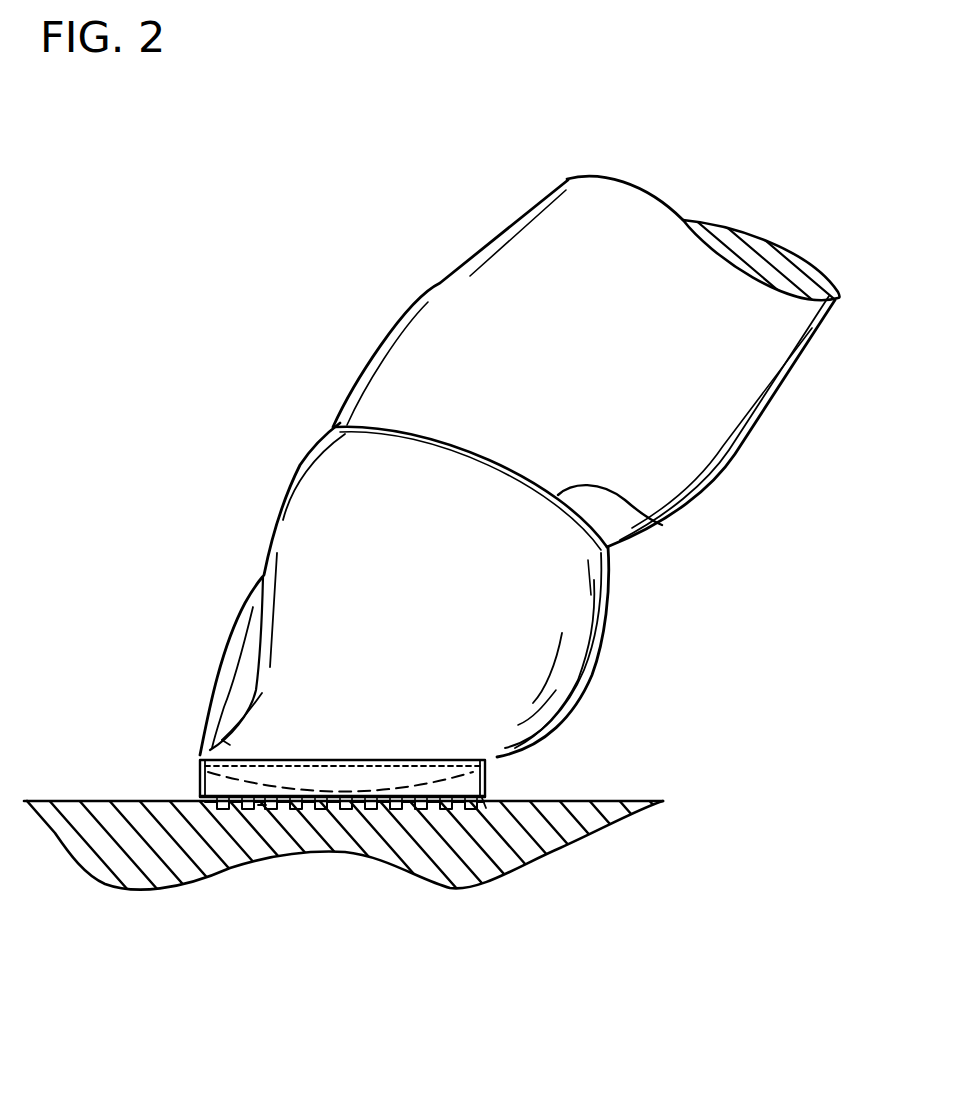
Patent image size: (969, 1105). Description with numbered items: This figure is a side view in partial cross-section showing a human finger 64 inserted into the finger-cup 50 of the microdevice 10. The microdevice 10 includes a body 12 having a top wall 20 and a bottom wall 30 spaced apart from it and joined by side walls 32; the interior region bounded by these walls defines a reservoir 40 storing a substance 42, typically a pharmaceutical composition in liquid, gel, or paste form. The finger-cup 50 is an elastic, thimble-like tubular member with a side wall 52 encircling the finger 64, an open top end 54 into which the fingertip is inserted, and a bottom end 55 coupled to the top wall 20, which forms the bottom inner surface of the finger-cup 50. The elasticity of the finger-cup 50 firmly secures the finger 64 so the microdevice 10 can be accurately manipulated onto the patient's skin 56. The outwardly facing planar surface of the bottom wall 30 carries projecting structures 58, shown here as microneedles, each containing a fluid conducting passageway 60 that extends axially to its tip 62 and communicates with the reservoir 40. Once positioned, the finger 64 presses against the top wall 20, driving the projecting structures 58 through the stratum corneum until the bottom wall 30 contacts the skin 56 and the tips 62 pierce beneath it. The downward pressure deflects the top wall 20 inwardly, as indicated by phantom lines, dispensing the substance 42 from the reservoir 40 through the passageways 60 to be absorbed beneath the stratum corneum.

The microdevice 10 is at (108, 650).
The body 12 is at (530, 837).
The top wall 20 is at (458, 757).
The bottom wall 30 is at (491, 811).
The side walls 32 is at (199, 786).
The reservoir 40 is at (397, 777).
The substance 42 is at (486, 773).
The finger-cup 50 is at (285, 489).
The side wall 52 is at (553, 592).
The open top end 54 is at (655, 523).
The bottom end 55 is at (206, 756).
The skin 56 is at (637, 797).
The projecting structures 58 is at (345, 812).
The fluid conducting passageways 60 is at (368, 797).
The tips 62 is at (262, 810).
The finger 64 is at (743, 390).